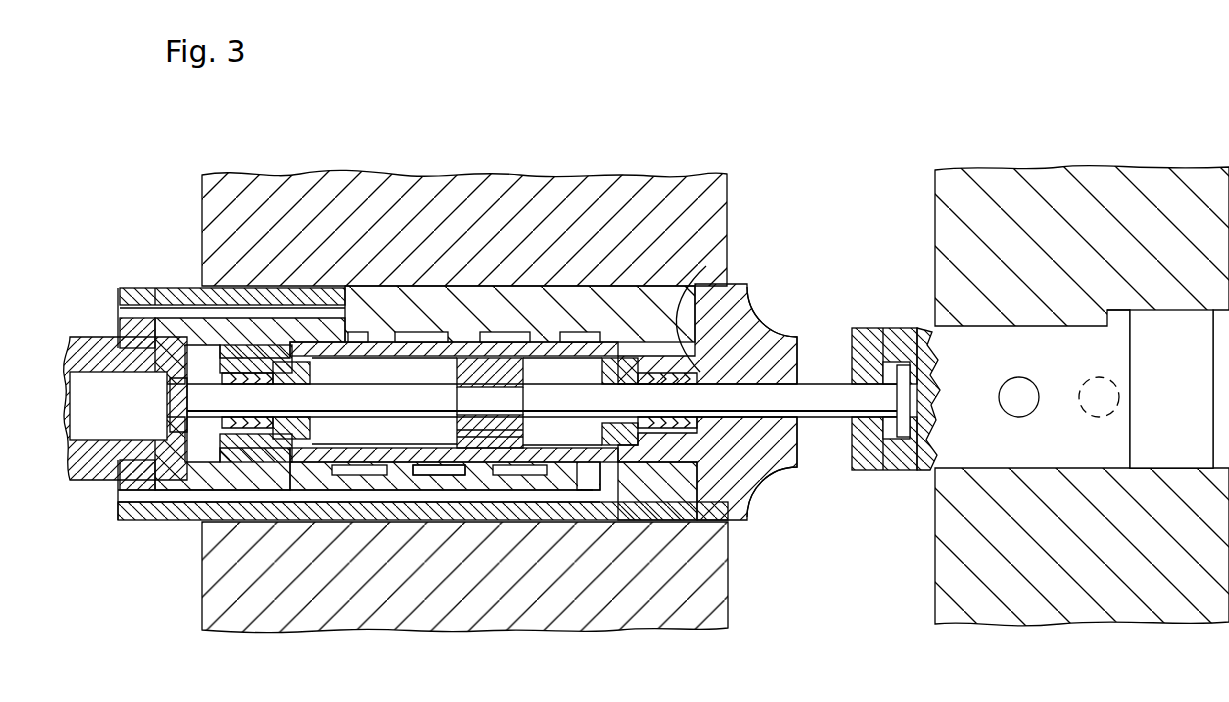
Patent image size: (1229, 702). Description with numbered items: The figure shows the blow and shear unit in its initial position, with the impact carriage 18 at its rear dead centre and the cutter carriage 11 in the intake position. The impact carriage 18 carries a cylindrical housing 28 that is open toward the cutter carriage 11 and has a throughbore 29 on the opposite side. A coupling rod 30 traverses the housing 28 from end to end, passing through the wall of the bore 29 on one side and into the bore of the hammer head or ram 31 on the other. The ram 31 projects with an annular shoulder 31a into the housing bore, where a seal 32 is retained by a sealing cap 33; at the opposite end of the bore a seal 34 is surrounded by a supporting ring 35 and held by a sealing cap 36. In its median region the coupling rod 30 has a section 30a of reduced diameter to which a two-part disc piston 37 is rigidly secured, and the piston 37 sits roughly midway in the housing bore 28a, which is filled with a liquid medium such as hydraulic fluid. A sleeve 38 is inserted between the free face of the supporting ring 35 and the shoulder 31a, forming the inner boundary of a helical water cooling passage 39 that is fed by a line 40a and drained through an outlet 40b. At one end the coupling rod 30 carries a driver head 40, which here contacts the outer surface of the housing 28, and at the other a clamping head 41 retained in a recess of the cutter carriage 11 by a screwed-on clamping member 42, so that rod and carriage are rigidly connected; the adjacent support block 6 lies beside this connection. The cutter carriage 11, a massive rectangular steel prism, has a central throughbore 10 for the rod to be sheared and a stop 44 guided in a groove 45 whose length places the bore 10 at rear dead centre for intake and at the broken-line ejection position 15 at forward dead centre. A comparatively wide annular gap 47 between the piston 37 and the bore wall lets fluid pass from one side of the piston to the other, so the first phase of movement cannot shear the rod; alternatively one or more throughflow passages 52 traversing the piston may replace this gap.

The support block 6 is at (100, 357).
The throughbore 10 is at (1019, 417).
The cutter carriage 11 is at (958, 372).
The ejection position 15 is at (1099, 417).
The impact carriage 18 is at (433, 276).
The cylindrical housing 28 is at (380, 305).
The housing bore 28a is at (350, 372).
The throughbore 29 is at (203, 386).
The coupling rod 30 is at (820, 418).
The section of reduced diameter 30a is at (490, 400).
The hammer head or ram 31 is at (773, 355).
The annular shoulder 31a is at (697, 275).
The seal 32 is at (770, 335).
The sealing cap 33 is at (605, 458).
The seal 34 is at (220, 443).
The supporting ring 35 is at (260, 447).
The sealing cap 36 is at (300, 470).
The two-part disc piston 37 is at (565, 335).
The sleeve 38 is at (400, 452).
The water cooling passage 39 is at (447, 470).
The driver head 40 is at (122, 520).
The line 40a is at (523, 497).
The outlet 40b is at (256, 312).
The clamping head 41 is at (900, 405).
The clamping member 42 is at (863, 355).
The stop 44 is at (1117, 320).
The groove 45 is at (1187, 320).
The annular gap 47 is at (487, 450).
The throughflow passages 52 is at (523, 430).